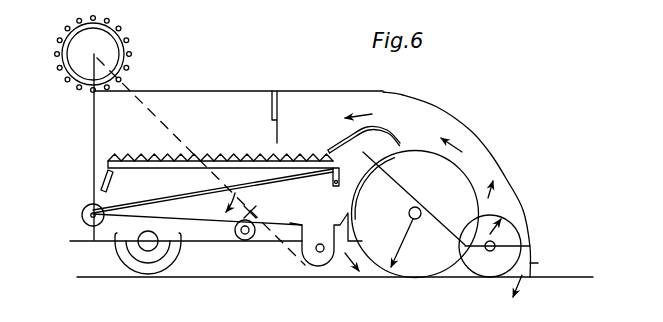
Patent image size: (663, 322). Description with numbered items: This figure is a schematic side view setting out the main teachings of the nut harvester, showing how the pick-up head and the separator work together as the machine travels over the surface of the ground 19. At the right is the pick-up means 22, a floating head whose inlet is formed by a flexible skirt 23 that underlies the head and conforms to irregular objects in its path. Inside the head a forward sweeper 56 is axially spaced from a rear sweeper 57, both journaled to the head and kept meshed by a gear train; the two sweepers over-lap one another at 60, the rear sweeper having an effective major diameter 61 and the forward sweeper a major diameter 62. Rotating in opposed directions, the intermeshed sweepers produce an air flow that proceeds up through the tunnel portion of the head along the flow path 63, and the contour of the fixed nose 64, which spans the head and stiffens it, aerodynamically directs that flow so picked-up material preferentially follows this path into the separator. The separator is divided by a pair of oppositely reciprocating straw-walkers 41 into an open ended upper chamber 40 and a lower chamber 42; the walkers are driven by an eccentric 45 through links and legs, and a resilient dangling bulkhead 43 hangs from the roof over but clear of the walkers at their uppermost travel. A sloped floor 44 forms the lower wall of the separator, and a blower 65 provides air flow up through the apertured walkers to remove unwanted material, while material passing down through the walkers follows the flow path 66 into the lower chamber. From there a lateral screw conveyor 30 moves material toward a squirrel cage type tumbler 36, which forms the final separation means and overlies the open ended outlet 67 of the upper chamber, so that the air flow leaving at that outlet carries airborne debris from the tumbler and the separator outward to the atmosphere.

The surface of the ground 19 is at (575, 278).
The pick-up means 22 is at (498, 153).
The skirt 23 is at (540, 263).
The lateral screw conveyor 30 is at (322, 266).
The squirrel cage type tumbler 36 is at (134, 44).
The upper chamber 40 is at (219, 109).
The straw-walkers 41 is at (198, 152).
The lower chamber 42 is at (202, 203).
The resilient dangling bulkhead 43 is at (310, 122).
The sloped floor 44 is at (125, 200).
The eccentric 45 is at (82, 211).
The forward sweeper 56 is at (466, 272).
The rear sweeper 57 is at (373, 271).
The overlap of the sweepers 60 is at (493, 215).
The effective major diameter of the rearward sweeper 61 is at (403, 243).
The major diameter of the forward sweeper 62 is at (497, 235).
The air flow path 63 is at (458, 143).
The fixed nose 64 is at (398, 143).
The blower 65 is at (236, 224).
The flow path of material 66 is at (315, 224).
The open ended outlet 67 is at (73, 132).